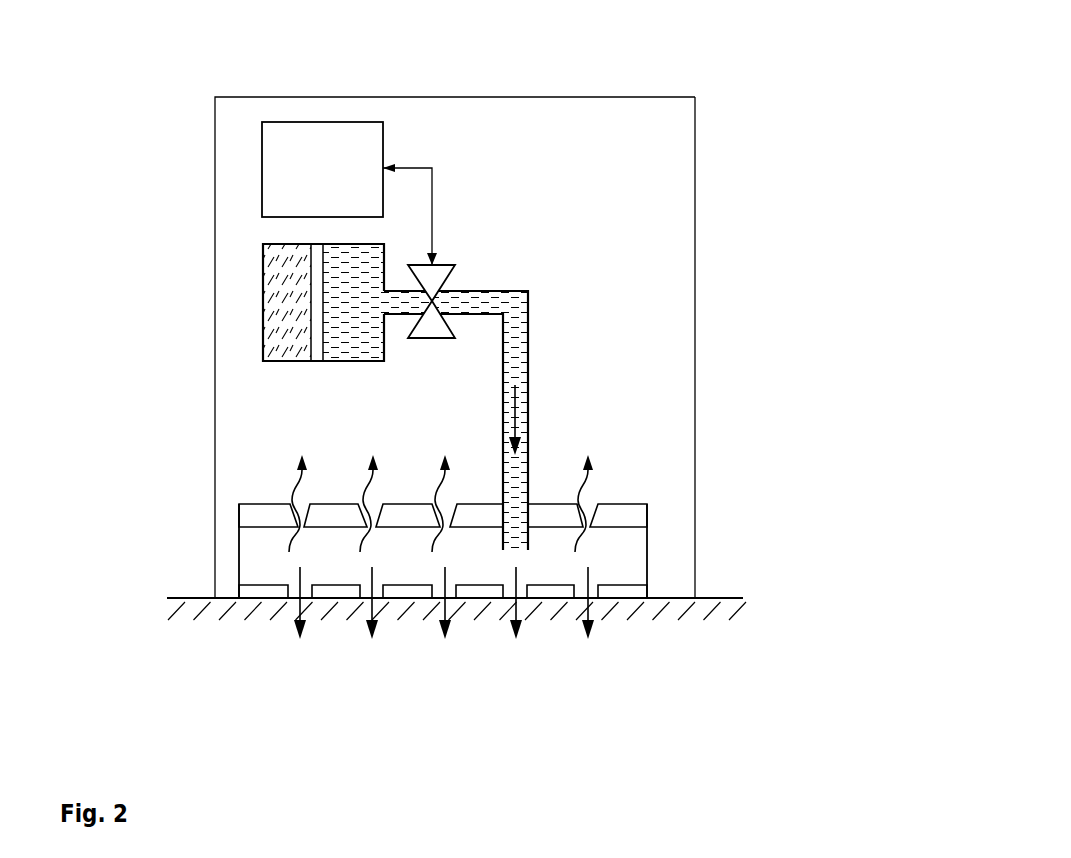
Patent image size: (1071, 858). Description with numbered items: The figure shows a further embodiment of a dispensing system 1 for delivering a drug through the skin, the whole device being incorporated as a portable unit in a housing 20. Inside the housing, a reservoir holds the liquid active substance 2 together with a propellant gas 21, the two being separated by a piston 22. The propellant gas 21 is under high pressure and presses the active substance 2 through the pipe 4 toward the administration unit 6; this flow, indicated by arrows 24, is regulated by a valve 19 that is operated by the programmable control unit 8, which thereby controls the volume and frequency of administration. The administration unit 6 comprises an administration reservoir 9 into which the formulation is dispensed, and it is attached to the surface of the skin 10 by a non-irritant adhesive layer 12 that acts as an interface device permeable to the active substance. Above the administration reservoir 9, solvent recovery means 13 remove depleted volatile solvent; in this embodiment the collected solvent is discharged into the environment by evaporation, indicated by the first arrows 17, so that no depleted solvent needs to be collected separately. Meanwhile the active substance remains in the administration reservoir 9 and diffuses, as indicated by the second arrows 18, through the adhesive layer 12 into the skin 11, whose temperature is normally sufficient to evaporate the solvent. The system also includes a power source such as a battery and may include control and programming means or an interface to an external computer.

The dispensing system 1 is at (668, 63).
The active substance 2 is at (352, 331).
The pipe 4 is at (529, 328).
The administration unit 6 is at (240, 483).
The control unit 8 is at (290, 166).
The administration reservoir 9 is at (257, 557).
The surface of the skin 10 is at (729, 587).
The skin 11 is at (243, 612).
The adhesive layer 12 is at (260, 593).
The solvent recovery means 13 is at (250, 517).
The first arrows 17 is at (590, 483).
The second arrows 18 is at (593, 623).
The valve 19 is at (435, 278).
The housing 20 is at (700, 403).
The propellant gas 21 is at (275, 296).
The piston 22 is at (311, 326).
The arrows 24 is at (529, 402).